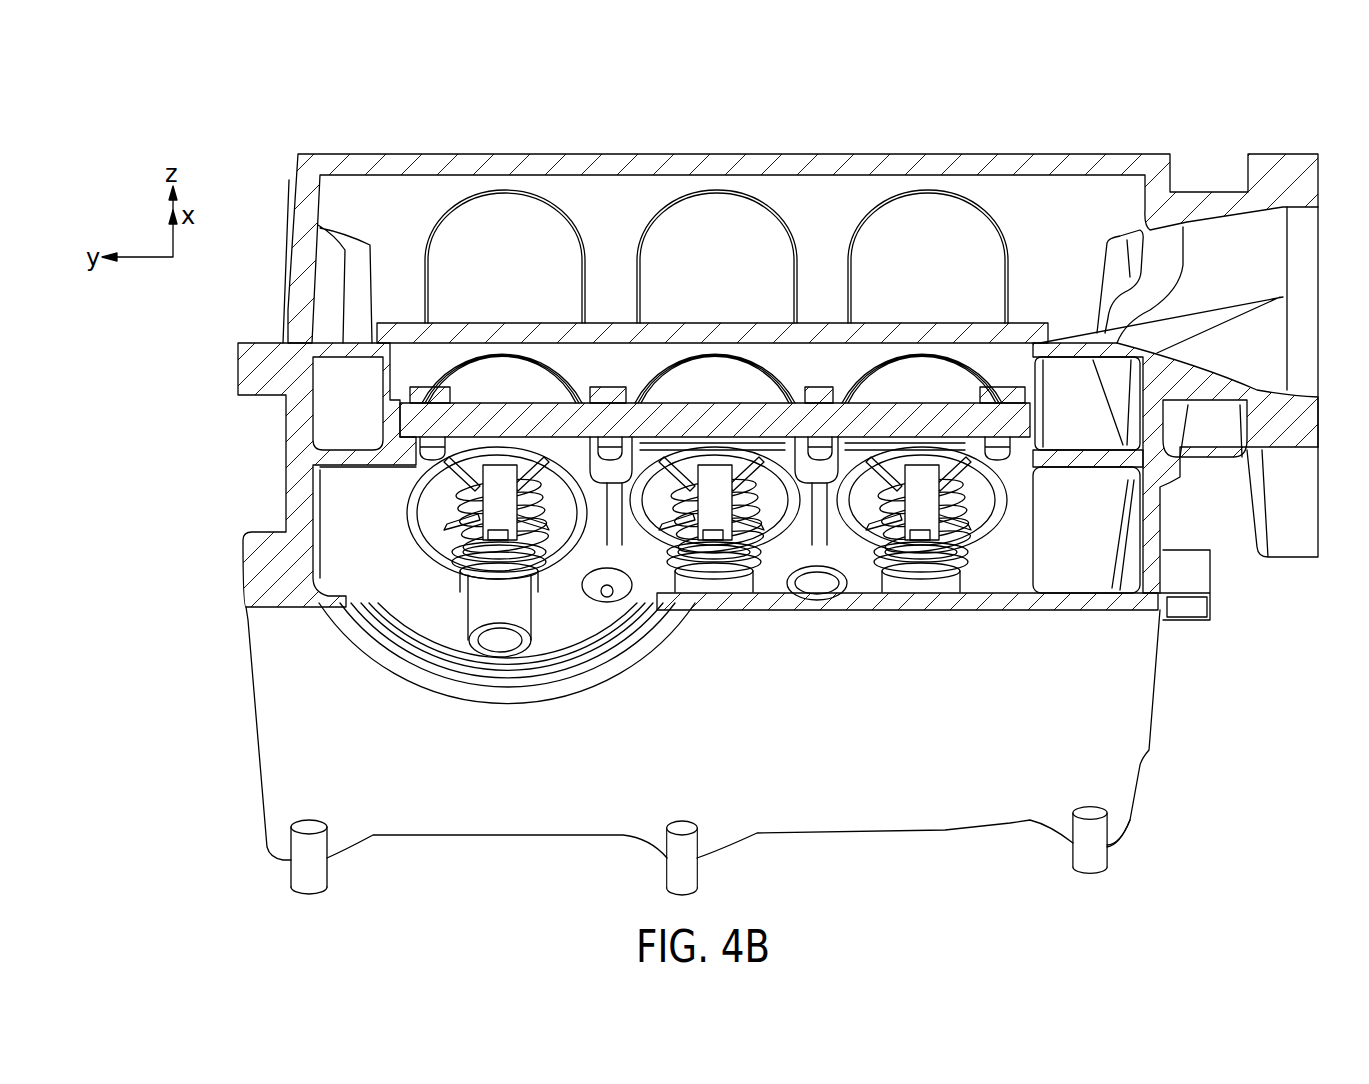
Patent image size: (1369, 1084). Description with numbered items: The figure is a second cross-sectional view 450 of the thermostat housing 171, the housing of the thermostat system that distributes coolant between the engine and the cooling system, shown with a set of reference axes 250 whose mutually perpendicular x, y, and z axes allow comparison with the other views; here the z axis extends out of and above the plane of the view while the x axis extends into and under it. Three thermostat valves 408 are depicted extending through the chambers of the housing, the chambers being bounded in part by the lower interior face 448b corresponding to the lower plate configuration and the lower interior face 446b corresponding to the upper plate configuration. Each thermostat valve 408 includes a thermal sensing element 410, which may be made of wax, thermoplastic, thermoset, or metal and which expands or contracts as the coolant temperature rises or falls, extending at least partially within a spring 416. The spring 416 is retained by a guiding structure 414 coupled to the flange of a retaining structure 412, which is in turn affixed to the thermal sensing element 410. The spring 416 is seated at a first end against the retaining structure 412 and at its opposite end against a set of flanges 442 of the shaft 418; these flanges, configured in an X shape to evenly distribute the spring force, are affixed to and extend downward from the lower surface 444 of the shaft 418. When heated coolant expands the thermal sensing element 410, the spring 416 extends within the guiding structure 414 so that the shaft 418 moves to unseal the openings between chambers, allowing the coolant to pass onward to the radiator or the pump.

The set of reference axes 250 is at (112, 190).
The thermostat housing 171 is at (724, 124).
The second cross-sectional view 450 is at (1324, 116).
The guiding structure 414 is at (531, 435).
The set of flanges 442 is at (547, 462).
The spring 416 is at (463, 510).
The shaft 418 is at (523, 397).
The lower interior face 446b is at (1063, 411).
The lower interior face 448b is at (1068, 544).
The lower surface 444 is at (683, 600).
The retaining structure 412 is at (550, 568).
The thermal sensing element 410 is at (493, 637).
The thermostat valve 408 is at (521, 678).